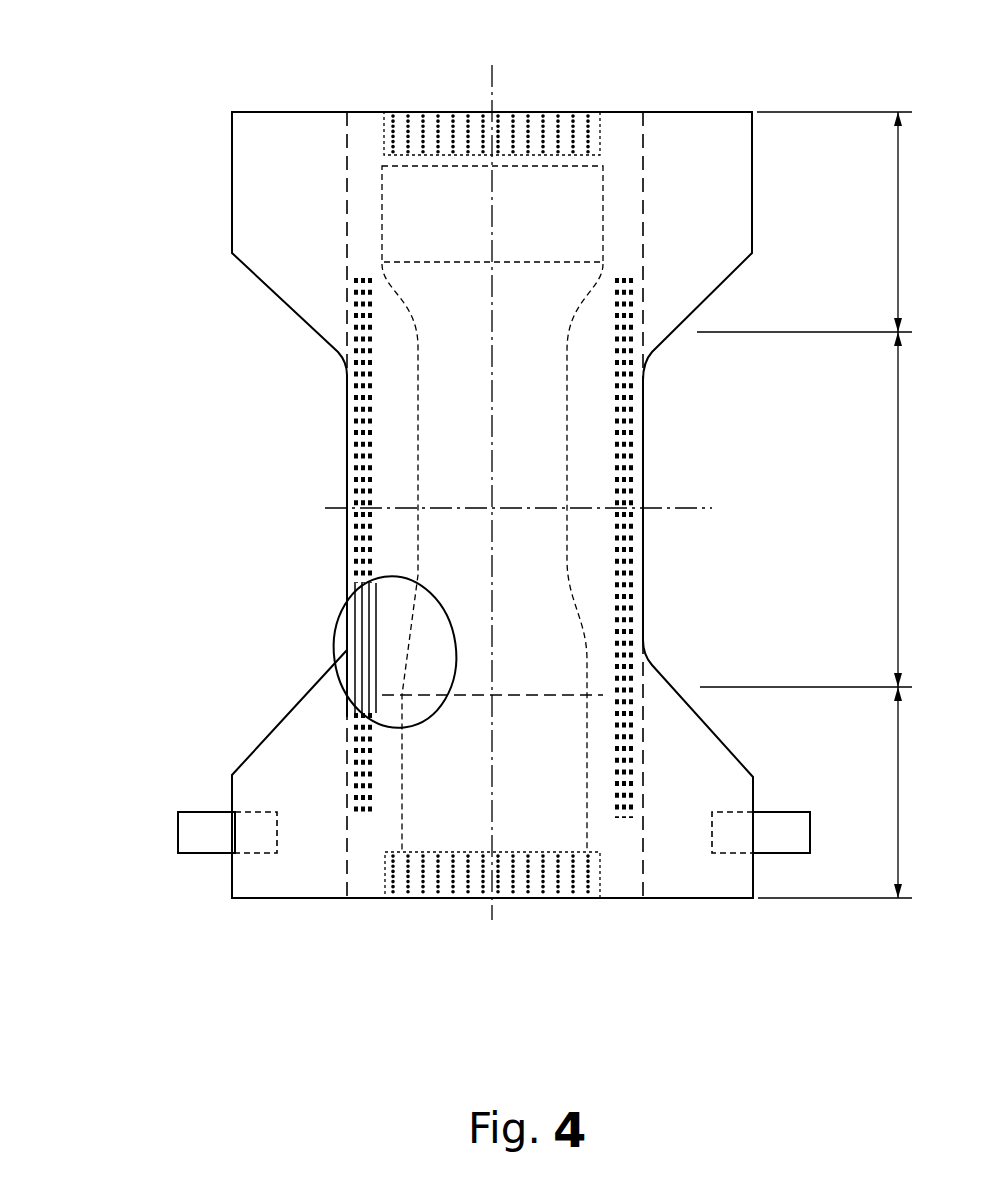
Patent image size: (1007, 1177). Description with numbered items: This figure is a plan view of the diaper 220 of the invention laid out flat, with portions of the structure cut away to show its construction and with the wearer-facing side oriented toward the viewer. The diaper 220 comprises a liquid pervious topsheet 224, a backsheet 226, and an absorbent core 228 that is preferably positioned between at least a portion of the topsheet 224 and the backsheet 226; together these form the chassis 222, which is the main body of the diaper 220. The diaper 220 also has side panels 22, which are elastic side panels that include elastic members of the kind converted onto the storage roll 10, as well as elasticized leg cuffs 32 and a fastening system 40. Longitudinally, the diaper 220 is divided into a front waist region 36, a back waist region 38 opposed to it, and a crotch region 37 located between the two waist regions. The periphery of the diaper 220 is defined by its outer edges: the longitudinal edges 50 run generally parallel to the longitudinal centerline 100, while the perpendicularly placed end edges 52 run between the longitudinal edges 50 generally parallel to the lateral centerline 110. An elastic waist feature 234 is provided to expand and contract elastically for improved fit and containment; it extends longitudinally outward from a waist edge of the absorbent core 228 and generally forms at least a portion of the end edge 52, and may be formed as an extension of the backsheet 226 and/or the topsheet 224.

The diaper 220 is at (202, 107).
The side panels 22 is at (256, 220).
The end edges 52 is at (445, 112).
The longitudinal centerline 100 is at (494, 80).
The elastic waist feature 234 is at (580, 112).
The front waist region 36 is at (893, 224).
The crotch region 37 is at (893, 510).
The back waist region 38 is at (897, 793).
The longitudinal edges 50 is at (345, 412).
The topsheet 224 is at (520, 392).
The lateral centerline 110 is at (703, 508).
The chassis 222 is at (327, 457).
The absorbent core 228 is at (408, 650).
The storage roll 10 is at (385, 678).
The elasticized leg cuffs 32 is at (632, 612).
The fastening system 40 is at (185, 865).
The backsheet 226 is at (358, 880).